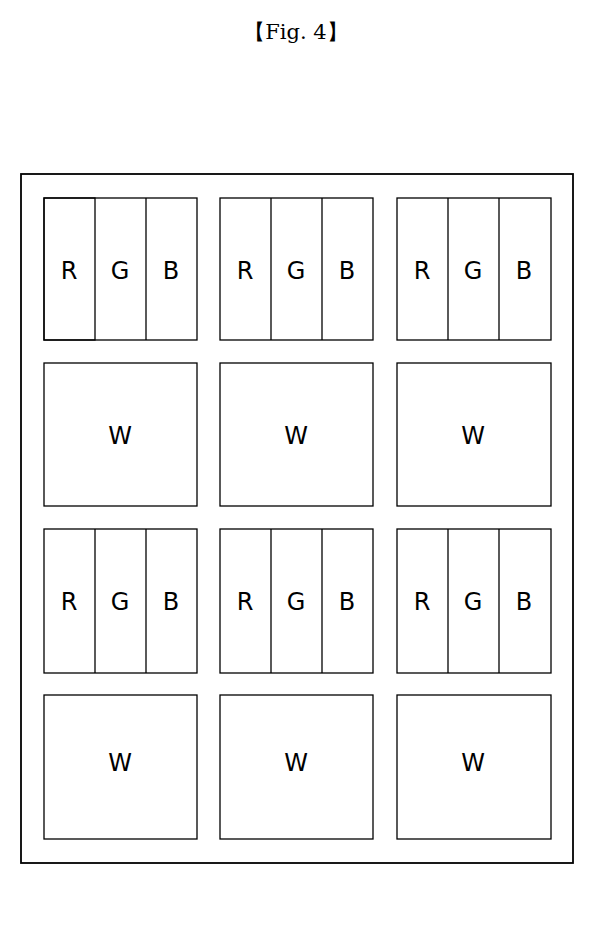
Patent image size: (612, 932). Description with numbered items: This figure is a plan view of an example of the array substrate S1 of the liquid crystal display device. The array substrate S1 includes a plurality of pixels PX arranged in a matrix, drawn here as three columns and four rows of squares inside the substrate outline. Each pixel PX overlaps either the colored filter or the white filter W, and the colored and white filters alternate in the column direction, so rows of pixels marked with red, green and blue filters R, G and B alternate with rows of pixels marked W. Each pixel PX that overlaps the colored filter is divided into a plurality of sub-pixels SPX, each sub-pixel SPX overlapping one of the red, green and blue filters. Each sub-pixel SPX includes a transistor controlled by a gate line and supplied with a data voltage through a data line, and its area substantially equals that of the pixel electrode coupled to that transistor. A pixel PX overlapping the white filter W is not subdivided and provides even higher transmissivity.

The array substrate S1 is at (290, 174).
The pixel PX is at (120, 224).
The sub-pixel SPX is at (72, 212).